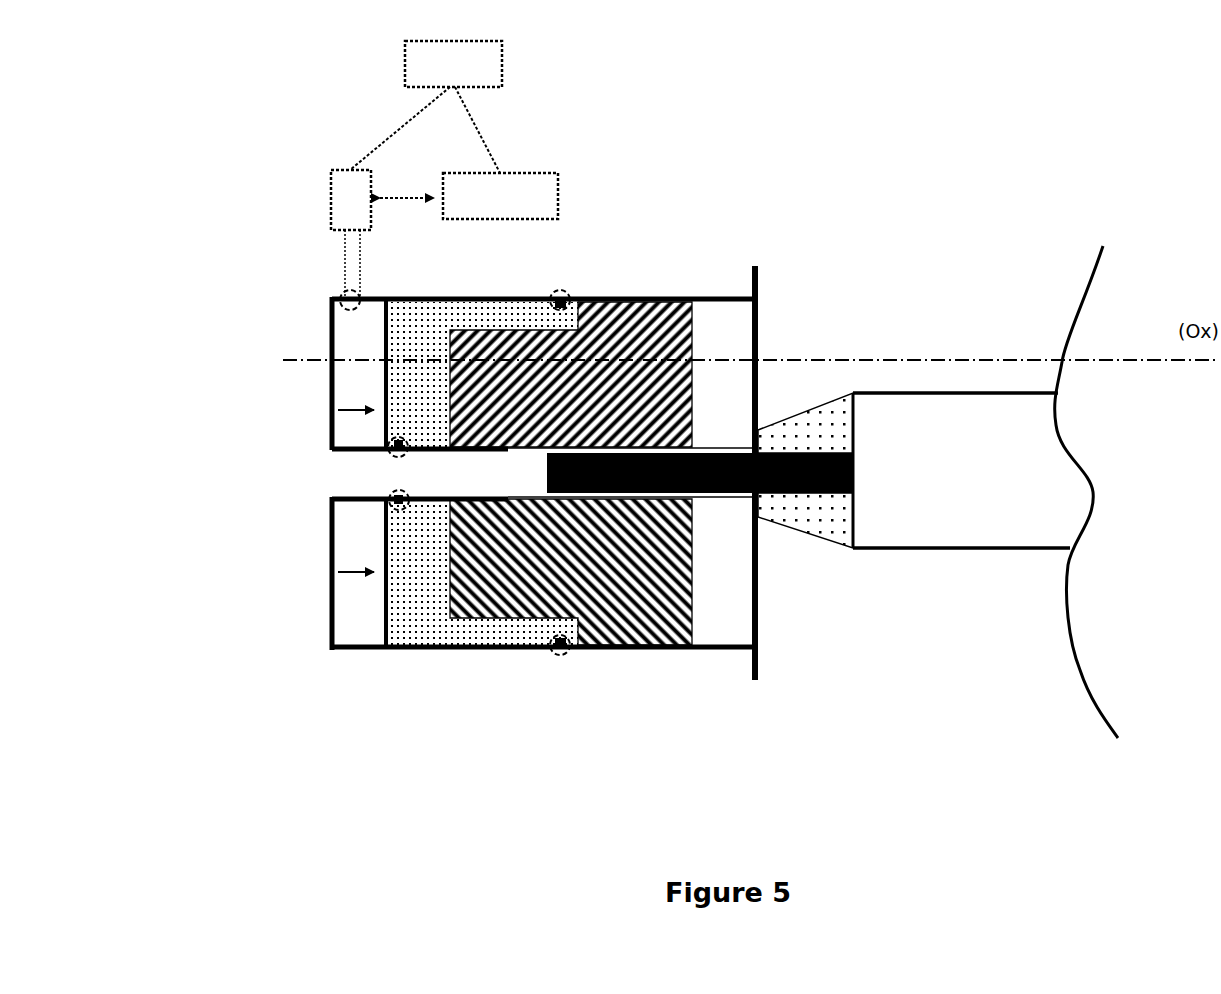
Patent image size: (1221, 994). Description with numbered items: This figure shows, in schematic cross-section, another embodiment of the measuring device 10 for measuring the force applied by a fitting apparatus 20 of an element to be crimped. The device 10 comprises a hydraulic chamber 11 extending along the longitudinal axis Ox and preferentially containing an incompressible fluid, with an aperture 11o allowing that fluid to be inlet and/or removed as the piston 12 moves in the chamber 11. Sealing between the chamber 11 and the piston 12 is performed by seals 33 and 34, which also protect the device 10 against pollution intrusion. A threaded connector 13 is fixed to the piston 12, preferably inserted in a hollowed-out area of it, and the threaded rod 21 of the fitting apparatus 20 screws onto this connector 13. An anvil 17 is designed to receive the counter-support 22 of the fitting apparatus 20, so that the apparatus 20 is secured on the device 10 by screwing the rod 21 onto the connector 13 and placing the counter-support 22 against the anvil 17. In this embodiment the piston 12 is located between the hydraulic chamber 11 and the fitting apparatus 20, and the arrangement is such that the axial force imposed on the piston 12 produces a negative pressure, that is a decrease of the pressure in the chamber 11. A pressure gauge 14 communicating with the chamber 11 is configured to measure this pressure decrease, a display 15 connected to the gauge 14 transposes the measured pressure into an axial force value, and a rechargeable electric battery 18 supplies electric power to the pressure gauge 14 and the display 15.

The measuring device 10 is at (776, 124).
The hydraulic chamber 11 is at (343, 338).
The aperture 11o is at (346, 288).
The piston 12 is at (483, 473).
The threaded connector 13 is at (571, 473).
The pressure gauge 14 is at (390, 158).
The display 15 is at (500, 153).
The anvil 17 is at (758, 620).
The rechargeable electric battery 18 is at (453, 64).
The fitting apparatus 20 is at (1054, 210).
The threaded rod 21 is at (782, 452).
The counter-support 22 is at (822, 517).
The seal 33 is at (393, 447).
The seal 34 is at (557, 290).